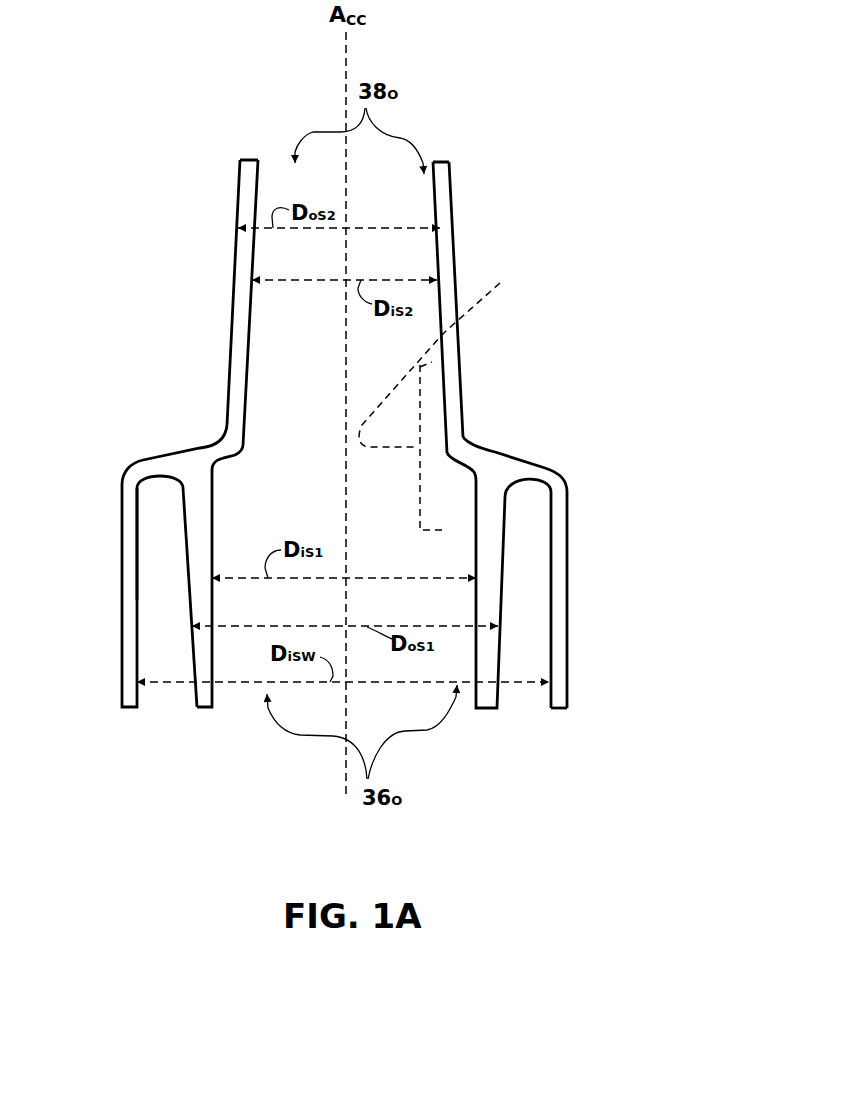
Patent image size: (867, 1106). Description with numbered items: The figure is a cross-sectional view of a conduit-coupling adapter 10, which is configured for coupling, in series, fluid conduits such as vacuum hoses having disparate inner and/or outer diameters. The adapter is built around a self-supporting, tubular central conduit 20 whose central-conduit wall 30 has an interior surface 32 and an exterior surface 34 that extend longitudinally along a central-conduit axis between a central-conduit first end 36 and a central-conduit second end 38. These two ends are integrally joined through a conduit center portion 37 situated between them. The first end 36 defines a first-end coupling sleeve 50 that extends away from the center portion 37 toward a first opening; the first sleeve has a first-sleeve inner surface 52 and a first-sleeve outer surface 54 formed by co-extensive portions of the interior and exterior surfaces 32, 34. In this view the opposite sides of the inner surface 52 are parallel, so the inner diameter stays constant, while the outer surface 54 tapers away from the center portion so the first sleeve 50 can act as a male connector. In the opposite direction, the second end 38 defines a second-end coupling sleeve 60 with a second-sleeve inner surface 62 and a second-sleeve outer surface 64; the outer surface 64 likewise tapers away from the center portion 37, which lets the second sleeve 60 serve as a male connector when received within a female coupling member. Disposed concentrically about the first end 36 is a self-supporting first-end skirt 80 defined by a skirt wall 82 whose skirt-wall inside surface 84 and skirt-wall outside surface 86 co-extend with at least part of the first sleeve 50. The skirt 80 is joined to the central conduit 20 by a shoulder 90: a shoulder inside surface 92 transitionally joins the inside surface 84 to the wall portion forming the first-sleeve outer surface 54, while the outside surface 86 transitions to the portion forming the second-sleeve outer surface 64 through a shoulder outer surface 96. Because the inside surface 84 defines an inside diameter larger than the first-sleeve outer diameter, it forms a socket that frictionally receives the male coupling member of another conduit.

The conduit-coupling adapter 10 is at (579, 272).
The central conduit 20 is at (200, 530).
The central-conduit wall 30 is at (483, 517).
The interior surface 32 is at (253, 337).
The exterior surface 34 is at (213, 542).
The central-conduit first end 36 is at (198, 607).
The conduit center portion 37 is at (444, 398).
The central-conduit second end 38 is at (186, 302).
The first-end coupling sleeve 50 is at (198, 643).
The first-sleeve inner surface 52 is at (215, 637).
The first-sleeve outer surface 54 is at (160, 593).
The second-end coupling sleeve 60 is at (232, 299).
The second-sleeve inner surface 62 is at (491, 300).
The second-sleeve outer surface 64 is at (455, 250).
The first-end skirt 80 is at (624, 600).
The skirt wall 82 is at (560, 622).
The skirt-wall inside surface 84 is at (553, 640).
The skirt-wall outside surface 86 is at (567, 674).
The shoulder 90 is at (537, 472).
The shoulder inside surface 92 is at (527, 483).
The shoulder outer surface 96 is at (520, 472).